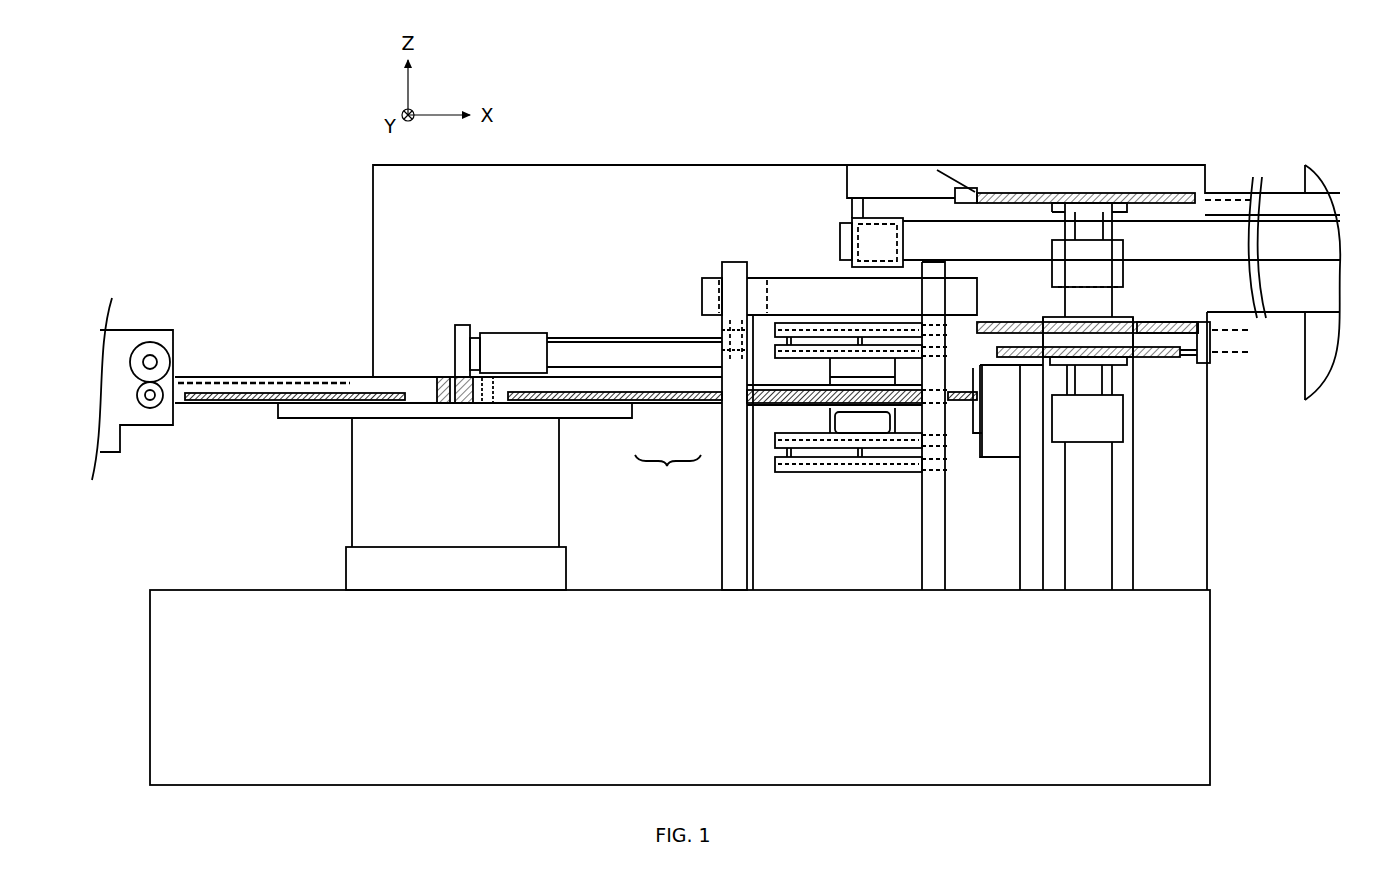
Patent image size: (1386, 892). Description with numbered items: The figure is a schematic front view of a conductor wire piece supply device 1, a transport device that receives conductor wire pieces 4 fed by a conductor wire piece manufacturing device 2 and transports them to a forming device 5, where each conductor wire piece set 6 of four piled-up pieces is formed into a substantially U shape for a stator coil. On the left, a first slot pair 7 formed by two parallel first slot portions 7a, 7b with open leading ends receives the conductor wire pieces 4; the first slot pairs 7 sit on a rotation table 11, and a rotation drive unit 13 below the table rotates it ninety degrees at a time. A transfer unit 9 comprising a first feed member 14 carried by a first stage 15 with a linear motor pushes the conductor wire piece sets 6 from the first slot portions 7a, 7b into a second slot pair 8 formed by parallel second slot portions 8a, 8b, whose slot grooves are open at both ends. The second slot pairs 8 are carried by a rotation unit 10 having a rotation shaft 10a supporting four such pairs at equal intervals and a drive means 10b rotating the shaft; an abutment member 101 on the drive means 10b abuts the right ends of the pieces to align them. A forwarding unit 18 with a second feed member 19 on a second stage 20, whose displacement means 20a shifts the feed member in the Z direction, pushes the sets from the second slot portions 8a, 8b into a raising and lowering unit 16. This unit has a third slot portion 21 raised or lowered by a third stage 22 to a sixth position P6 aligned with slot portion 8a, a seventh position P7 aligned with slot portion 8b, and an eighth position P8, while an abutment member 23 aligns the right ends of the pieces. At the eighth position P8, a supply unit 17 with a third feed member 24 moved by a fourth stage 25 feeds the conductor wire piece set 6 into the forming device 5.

The conductor wire piece supply device 1 is at (1036, 67).
The conductor wire piece manufacturing device 2 is at (163, 312).
The conductor wire piece 4 is at (267, 382).
The forming device 5 is at (1290, 156).
The conductor wire piece set 6 is at (1029, 162).
The first slot pair 7 is at (448, 404).
The first slot portion 7a is at (444, 403).
The first slot portion 7b is at (465, 403).
The second slot pair 8 is at (862, 383).
The second slot portion 8a is at (803, 323).
The second slot portion 8b is at (828, 323).
The transfer unit 9 is at (477, 322).
The rotation unit 10 is at (902, 477).
The rotation shaft 10a is at (814, 390).
The drive means 10b is at (1002, 458).
The rotation table 11 is at (297, 418).
The rotation drive unit 13 is at (346, 560).
The first feed member 14 is at (490, 390).
The first stage 15 is at (505, 333).
The raising and lowering unit 16 is at (1160, 400).
The supply unit 17 is at (832, 183).
The forwarding unit 18 is at (703, 270).
The second feed member 19 is at (730, 352).
The second stage 20 is at (799, 408).
The displacement means 20a is at (730, 325).
The third slot portion 21 is at (1088, 203).
The third stage 22 is at (1125, 420).
The abutment member 23 is at (1215, 355).
The third feed member 24 is at (970, 190).
The fourth stage 25 is at (843, 228).
The abutment member 101 is at (978, 433).
The sixth position P6 is at (1248, 359).
The seventh position P7 is at (1248, 336).
The eighth position P8 is at (1218, 200).